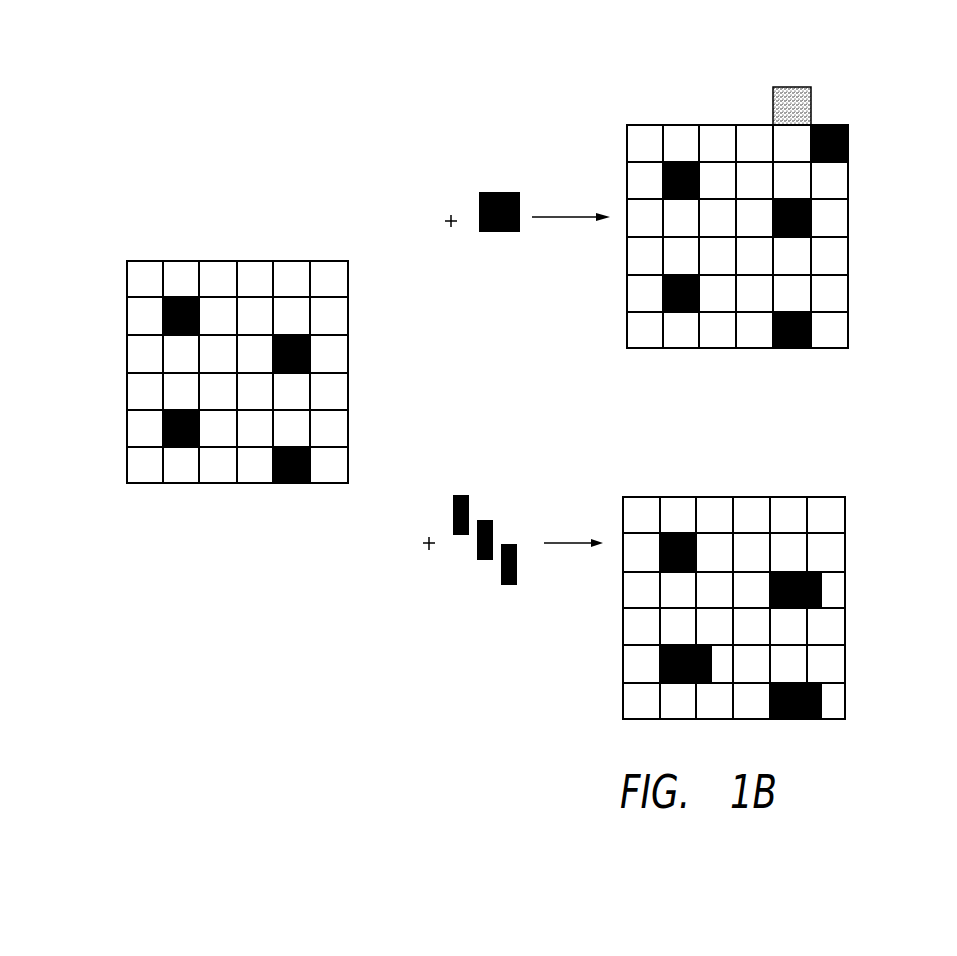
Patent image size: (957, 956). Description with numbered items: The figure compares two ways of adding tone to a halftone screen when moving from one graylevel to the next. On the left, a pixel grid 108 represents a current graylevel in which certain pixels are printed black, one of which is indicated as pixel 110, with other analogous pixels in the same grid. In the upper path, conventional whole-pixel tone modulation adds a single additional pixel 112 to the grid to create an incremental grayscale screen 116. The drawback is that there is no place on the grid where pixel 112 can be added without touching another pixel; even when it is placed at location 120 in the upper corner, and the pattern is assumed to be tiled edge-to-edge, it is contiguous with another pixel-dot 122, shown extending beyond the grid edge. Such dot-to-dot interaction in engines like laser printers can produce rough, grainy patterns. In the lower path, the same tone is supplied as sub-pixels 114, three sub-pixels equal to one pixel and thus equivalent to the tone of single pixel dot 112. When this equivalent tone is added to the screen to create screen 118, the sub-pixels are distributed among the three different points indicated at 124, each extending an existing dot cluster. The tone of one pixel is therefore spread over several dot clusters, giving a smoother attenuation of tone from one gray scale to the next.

The pixel grid 108 is at (127, 278).
The pixel 110 is at (163, 432).
The additional pixel 112 is at (497, 192).
The sub-pixels 114 is at (463, 570).
The incremental grayscale screen 116 is at (757, 125).
The screen 118 is at (845, 513).
The location 120 is at (848, 145).
The pixel-dot 122 is at (793, 87).
The points 124 is at (706, 683).